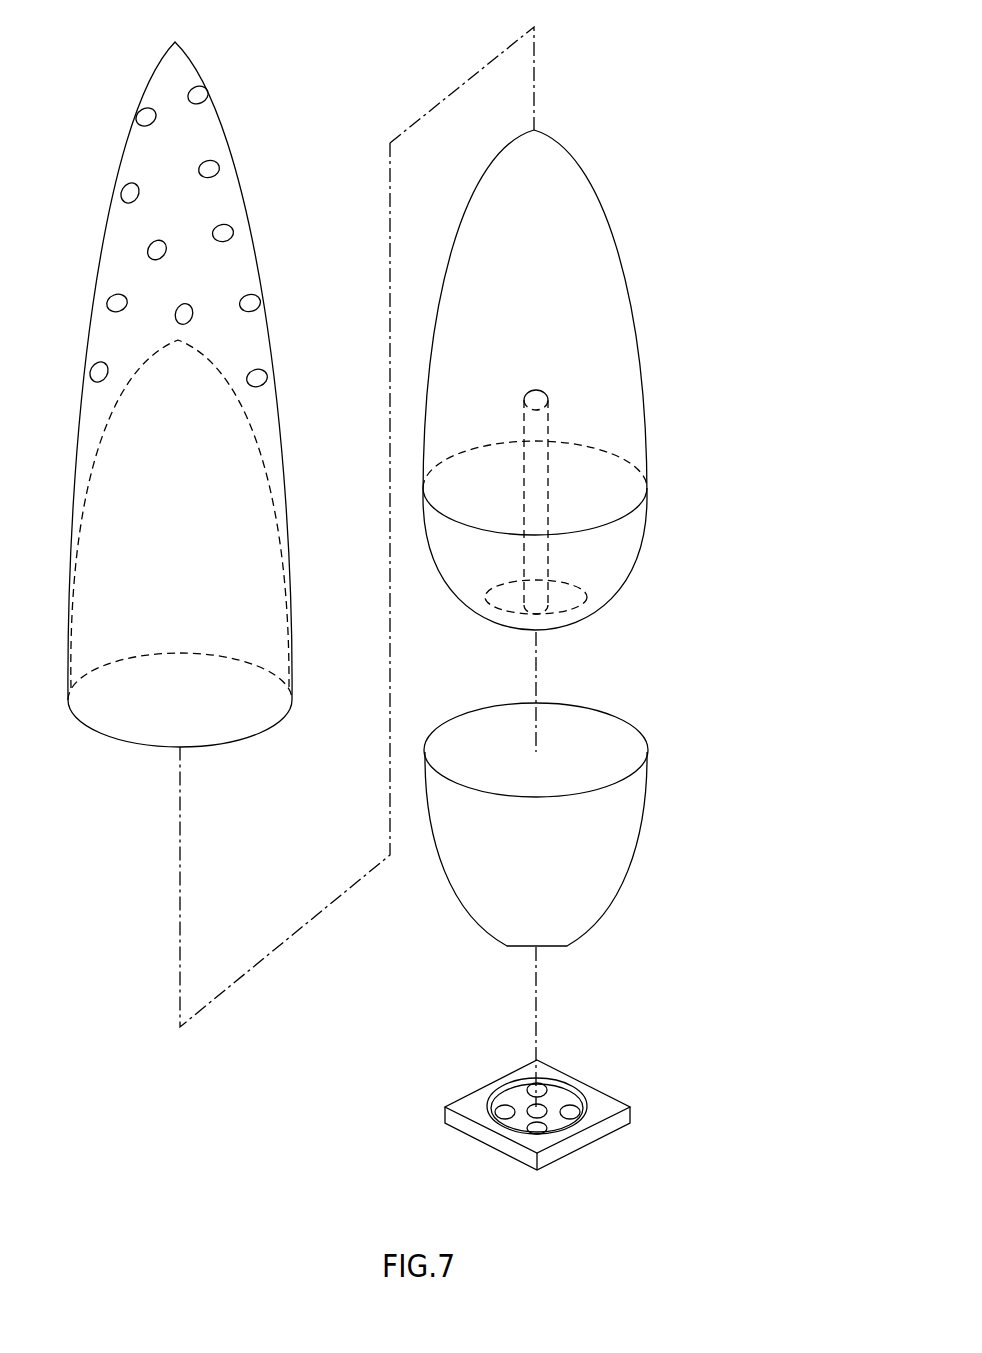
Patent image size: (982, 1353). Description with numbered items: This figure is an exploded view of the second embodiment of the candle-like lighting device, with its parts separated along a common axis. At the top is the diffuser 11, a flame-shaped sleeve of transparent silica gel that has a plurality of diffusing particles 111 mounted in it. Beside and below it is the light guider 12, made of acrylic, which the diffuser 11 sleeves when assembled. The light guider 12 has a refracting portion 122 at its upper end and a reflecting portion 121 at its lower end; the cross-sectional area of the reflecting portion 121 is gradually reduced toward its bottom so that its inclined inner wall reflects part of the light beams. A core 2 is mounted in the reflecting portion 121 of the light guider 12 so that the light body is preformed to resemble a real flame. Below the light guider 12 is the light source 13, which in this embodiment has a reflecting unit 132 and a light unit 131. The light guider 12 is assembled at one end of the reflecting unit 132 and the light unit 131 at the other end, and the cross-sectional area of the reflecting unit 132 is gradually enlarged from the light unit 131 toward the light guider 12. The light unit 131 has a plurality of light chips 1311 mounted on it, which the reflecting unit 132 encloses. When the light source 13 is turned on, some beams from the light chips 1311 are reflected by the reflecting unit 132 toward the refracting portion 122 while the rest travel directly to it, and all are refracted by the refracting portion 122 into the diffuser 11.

The diffuser 11 is at (220, 394).
The diffusing particles 111 is at (220, 167).
The light guider 12 is at (588, 377).
The refracting portion 122 is at (597, 185).
The reflecting portion 121 is at (630, 565).
The core 2 is at (537, 390).
The light source 13 is at (613, 936).
The reflecting unit 132 is at (628, 883).
The light unit 131 is at (593, 1100).
The light chips 1311 is at (572, 1103).